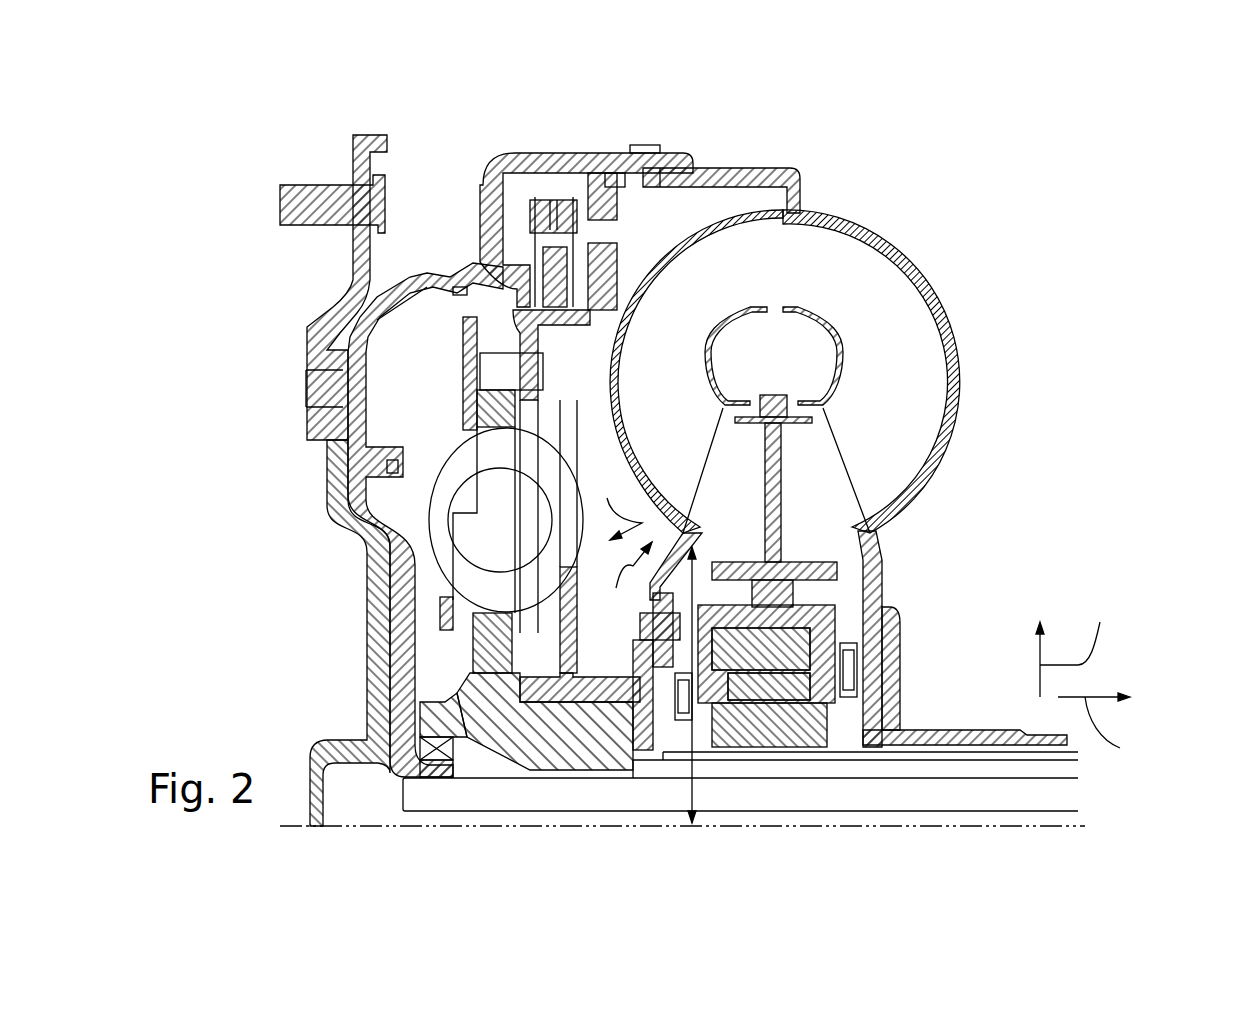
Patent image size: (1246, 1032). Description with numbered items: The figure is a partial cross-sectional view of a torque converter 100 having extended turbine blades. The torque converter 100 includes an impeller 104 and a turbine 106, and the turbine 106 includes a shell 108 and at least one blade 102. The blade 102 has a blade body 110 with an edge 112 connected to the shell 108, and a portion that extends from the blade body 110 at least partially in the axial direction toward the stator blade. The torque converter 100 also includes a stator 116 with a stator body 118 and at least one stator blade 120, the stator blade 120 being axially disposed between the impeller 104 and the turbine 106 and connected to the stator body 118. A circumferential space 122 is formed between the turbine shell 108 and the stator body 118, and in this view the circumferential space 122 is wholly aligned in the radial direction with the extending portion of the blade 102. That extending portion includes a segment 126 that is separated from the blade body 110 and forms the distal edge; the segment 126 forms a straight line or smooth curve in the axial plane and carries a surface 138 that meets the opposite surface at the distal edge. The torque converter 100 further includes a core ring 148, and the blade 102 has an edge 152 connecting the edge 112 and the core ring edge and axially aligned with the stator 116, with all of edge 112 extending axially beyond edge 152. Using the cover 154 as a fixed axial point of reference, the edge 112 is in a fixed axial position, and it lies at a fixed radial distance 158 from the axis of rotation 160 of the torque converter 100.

The torque converter 100 is at (1080, 155).
The blade 102 is at (648, 173).
The impeller 104 is at (883, 225).
The turbine 106 is at (723, 202).
The shell 108 is at (690, 277).
The blade body 110 is at (660, 337).
The edge 112 is at (727, 553).
The stator 116 is at (848, 515).
The stator body 118 is at (893, 573).
The stator blade 120 is at (783, 458).
The circumferential space 122 is at (702, 585).
The segment 126 is at (710, 524).
The surface 138 is at (837, 572).
The core ring 148 is at (710, 380).
The edge 152 is at (655, 410).
The cover 154 is at (382, 680).
The radial distance 158 is at (690, 790).
The axis of rotation 160 is at (947, 827).